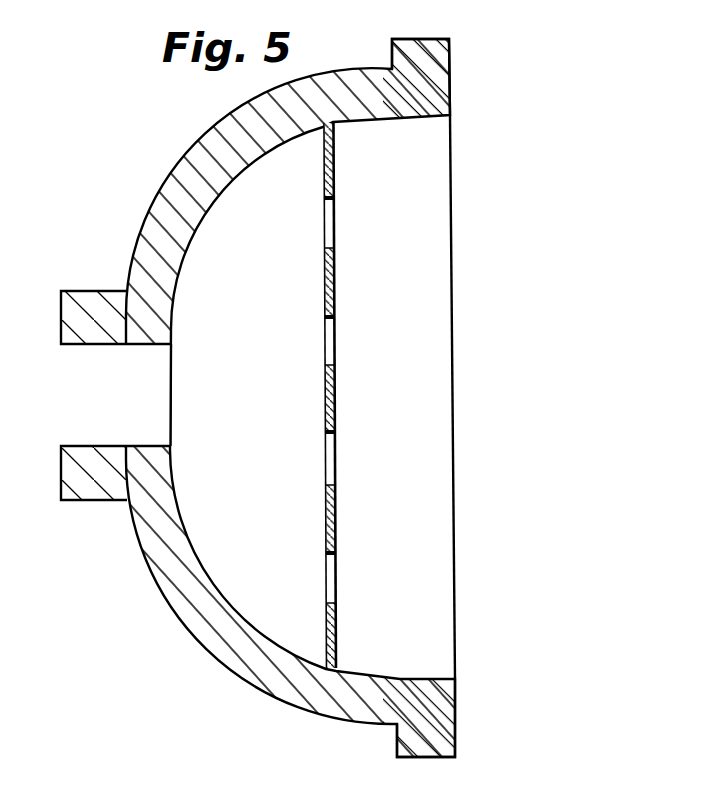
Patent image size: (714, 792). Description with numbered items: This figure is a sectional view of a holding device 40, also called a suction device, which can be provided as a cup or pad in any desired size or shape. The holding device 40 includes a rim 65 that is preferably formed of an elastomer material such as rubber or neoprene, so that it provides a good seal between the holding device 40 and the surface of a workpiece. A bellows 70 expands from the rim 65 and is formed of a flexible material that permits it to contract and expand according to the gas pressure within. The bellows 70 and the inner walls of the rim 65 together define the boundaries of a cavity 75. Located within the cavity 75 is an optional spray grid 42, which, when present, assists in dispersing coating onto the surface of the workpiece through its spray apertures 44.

The holding device 40 is at (261, 400).
The spray grid 42 is at (338, 400).
The spray apertures 44 is at (337, 328).
The rim 65 is at (442, 38).
The bellows 70 is at (255, 105).
The cavity 75 is at (396, 657).